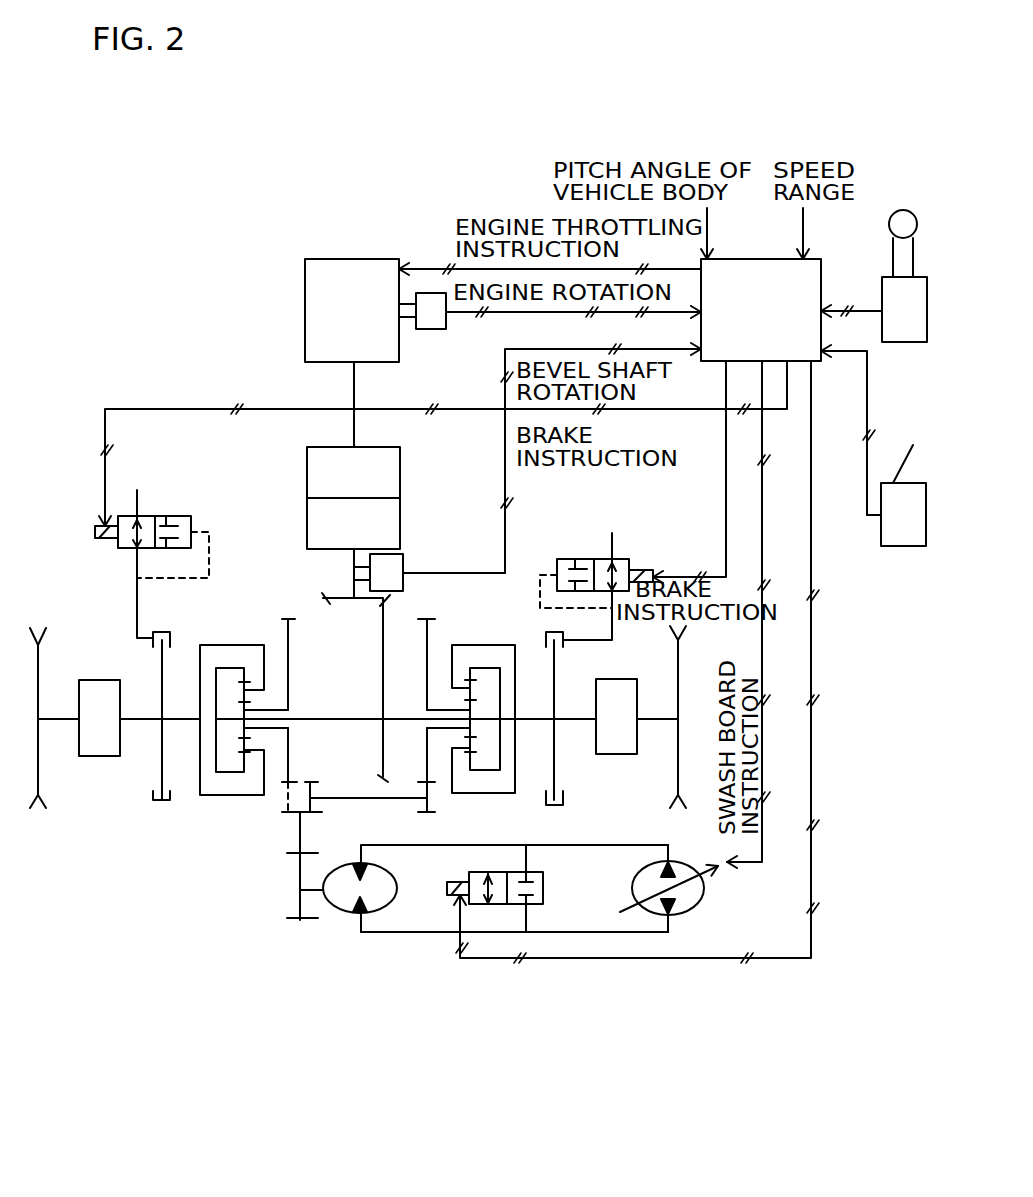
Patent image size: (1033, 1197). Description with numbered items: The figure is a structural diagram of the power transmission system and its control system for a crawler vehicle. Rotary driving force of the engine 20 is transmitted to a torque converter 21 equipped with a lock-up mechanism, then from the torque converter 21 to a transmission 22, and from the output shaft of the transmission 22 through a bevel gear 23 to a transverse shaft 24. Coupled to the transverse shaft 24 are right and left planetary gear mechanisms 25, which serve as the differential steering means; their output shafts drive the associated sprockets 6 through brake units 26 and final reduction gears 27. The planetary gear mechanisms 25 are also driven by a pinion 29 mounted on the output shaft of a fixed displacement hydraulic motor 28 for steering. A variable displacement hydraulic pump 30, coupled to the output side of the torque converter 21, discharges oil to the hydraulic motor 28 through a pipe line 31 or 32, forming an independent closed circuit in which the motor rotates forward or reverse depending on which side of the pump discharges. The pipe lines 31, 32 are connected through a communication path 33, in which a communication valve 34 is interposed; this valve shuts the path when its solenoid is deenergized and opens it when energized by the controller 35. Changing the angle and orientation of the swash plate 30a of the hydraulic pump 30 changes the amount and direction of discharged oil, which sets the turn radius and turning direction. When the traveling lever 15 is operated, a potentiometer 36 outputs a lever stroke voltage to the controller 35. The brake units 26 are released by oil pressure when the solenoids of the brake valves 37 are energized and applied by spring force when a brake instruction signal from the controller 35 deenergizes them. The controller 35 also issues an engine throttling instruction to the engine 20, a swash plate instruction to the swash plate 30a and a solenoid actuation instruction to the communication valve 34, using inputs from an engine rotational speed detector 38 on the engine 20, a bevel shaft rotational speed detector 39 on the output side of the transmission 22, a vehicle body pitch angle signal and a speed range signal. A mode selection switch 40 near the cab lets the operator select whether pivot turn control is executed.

The engine 20 is at (325, 259).
The engine rotational speed detector 38 is at (430, 293).
The controller 35 is at (765, 259).
The traveling lever 15 is at (888, 262).
The potentiometer 36 is at (890, 342).
The mode selection switch 40 is at (893, 546).
The torque converter 21 is at (307, 488).
The transmission 22 is at (307, 527).
The bevel shaft rotational speed detector 39 is at (403, 560).
The bevel gear 23 is at (378, 600).
The transverse shaft 24 is at (352, 722).
The planetary gear mechanisms 25 is at (218, 800).
The pinion 29 is at (298, 898).
The sprockets 6 is at (40, 665).
The final reduction gears 27 is at (88, 756).
The brake units 26 is at (160, 800).
The brake valves 37 is at (185, 516).
The communication path 33 is at (573, 845).
The hydraulic motor 28 is at (330, 907).
The hydraulic pump 30 is at (700, 905).
The swash plate 30a is at (712, 880).
The pipe line 31 is at (668, 845).
The pipe line 32 is at (635, 932).
The communication valve 34 is at (497, 905).